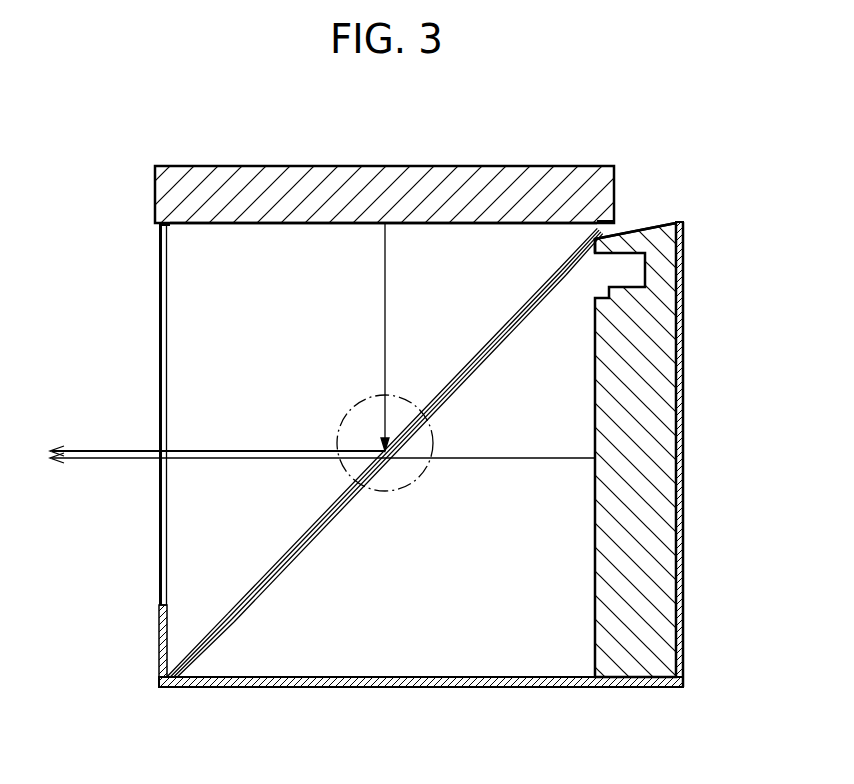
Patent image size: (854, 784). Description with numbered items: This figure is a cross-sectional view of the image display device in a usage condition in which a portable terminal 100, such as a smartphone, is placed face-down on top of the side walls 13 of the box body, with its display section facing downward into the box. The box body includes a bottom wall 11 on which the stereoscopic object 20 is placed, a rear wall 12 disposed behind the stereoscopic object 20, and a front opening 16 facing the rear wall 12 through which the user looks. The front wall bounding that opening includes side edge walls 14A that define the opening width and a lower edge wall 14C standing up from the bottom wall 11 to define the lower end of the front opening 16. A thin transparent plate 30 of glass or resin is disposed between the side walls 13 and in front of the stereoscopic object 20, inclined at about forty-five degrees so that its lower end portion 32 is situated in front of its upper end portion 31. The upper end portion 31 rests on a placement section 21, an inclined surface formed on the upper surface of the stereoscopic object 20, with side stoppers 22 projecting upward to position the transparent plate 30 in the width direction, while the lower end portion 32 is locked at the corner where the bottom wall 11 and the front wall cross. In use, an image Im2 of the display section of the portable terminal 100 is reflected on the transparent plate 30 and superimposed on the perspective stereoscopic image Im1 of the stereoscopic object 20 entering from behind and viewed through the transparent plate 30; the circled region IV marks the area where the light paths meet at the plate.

The portable terminal 100 is at (378, 166).
The side stopper 22 is at (616, 226).
The placement section 21 is at (638, 227).
The upper end portion 31 is at (583, 238).
The side edge wall 14A is at (158, 265).
The side wall 13 is at (212, 310).
The front opening 16 is at (157, 387).
The lower edge wall 14C is at (160, 632).
The bottom wall 11 is at (430, 687).
The rear wall 12 is at (682, 445).
The stereoscopic object 20 is at (671, 421).
The transparent plate 30 is at (385, 452).
The lower end portion 32 is at (212, 638).
The image of the display section Im2 is at (93, 450).
The perspective stereoscopic image Im1 is at (120, 460).
The enlarged region IV is at (427, 477).